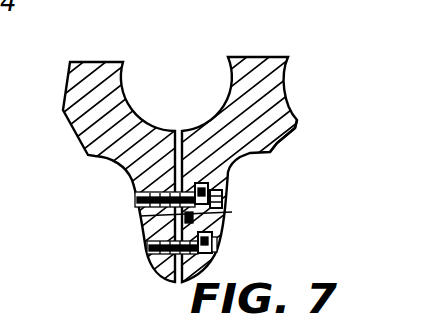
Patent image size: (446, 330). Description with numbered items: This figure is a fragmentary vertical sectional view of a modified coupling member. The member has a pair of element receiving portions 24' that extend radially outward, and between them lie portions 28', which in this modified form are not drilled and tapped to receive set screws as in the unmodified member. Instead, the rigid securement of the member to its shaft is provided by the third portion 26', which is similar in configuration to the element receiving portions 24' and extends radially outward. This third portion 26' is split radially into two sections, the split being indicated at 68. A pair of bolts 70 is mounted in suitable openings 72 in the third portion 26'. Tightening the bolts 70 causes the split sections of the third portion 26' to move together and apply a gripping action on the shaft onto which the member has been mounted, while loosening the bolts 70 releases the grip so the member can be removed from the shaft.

The element receiving portion 24' is at (200, 165).
The portion 28' is at (305, 140).
The third portion 26' is at (223, 210).
The openings 72 is at (135, 197).
The bolts 70 is at (228, 193).
The radial split 68 is at (150, 216).